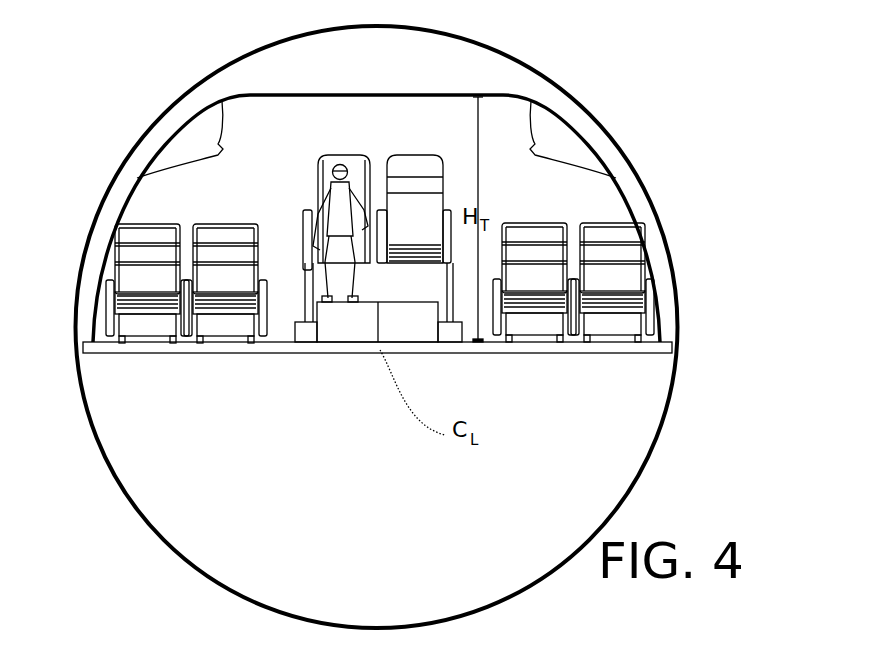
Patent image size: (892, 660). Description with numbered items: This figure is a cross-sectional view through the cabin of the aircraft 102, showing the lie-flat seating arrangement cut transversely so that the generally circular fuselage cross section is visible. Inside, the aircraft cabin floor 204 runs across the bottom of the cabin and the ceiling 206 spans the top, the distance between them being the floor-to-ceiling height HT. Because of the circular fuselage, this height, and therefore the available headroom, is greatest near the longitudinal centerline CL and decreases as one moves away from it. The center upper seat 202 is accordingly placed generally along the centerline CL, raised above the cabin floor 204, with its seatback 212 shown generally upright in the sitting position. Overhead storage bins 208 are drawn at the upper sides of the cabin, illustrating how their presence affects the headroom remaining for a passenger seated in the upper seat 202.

The aircraft 102 is at (526, 53).
The center upper seat 202 is at (352, 146).
The aircraft cabin floor 204 is at (290, 342).
The ceiling 206 is at (337, 96).
The overhead storage bins 208 is at (183, 152).
The seatback 212 is at (413, 195).